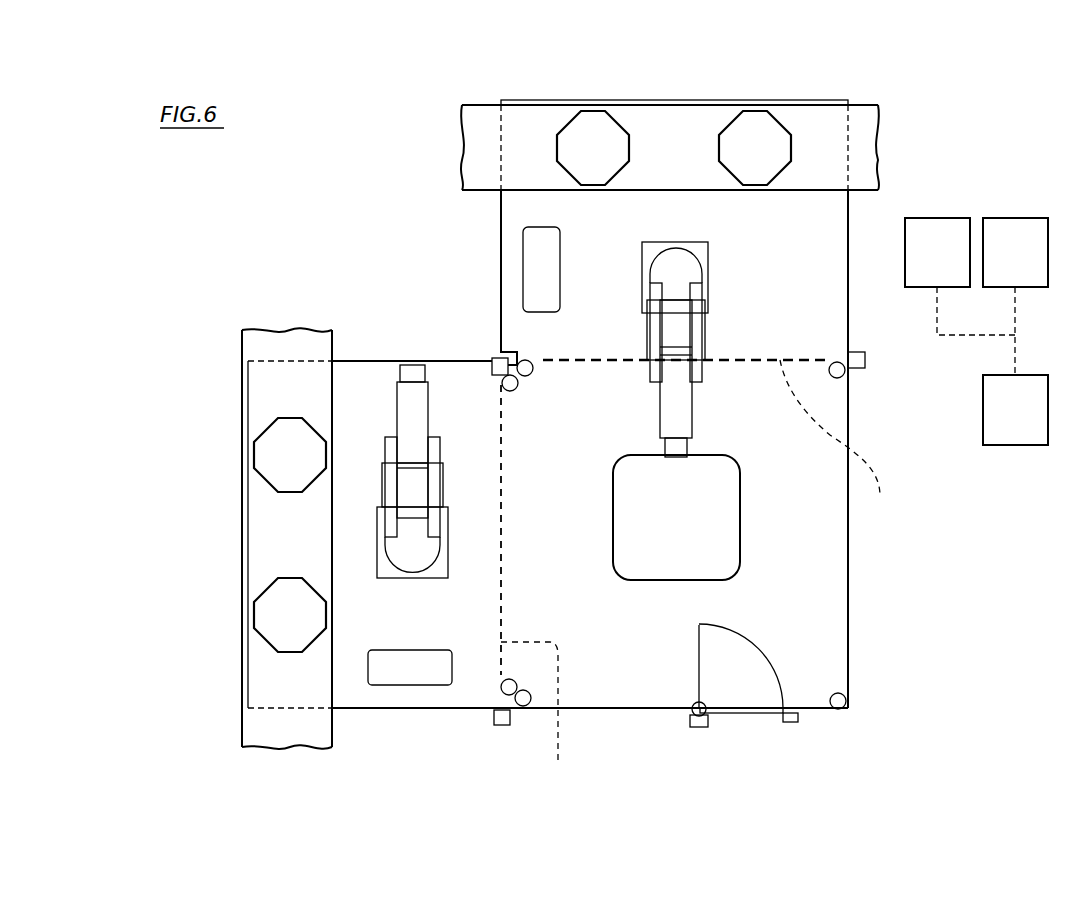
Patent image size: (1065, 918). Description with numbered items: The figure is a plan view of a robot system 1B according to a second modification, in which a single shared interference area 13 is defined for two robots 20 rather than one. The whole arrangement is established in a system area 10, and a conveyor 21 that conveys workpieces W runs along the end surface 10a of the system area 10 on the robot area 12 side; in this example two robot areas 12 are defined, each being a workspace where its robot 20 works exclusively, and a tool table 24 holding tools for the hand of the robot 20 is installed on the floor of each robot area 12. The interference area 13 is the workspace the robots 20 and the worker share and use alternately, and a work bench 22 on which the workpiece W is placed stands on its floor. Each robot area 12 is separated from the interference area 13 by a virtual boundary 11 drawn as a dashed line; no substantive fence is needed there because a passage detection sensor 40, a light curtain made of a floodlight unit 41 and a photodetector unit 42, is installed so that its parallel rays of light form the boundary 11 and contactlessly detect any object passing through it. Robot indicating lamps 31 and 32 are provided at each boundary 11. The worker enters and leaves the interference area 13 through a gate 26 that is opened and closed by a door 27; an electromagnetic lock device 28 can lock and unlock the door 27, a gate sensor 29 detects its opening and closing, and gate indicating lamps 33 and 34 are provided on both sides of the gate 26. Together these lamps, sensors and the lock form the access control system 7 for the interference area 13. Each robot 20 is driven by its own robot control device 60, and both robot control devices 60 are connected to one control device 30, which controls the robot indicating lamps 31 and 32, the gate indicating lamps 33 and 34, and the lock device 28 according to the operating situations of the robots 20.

The system area 10 is at (499, 99).
The end surface 10a is at (640, 100).
The workpiece W is at (593, 110).
The conveyor 21 is at (862, 100).
The robot system 1B is at (927, 104).
The passage detection sensor 40 is at (396, 273).
The tool table 24 is at (522, 255).
The robot area 12 is at (612, 312).
The robot 20 is at (736, 262).
The work bench 22 is at (613, 552).
The interference area 13 is at (794, 534).
The floodlight unit 41 is at (492, 362).
The robot indicating lamp 31 is at (518, 388).
The boundary 11 is at (701, 570).
The photodetector unit 42 is at (857, 352).
The robot indicating lamp 32 is at (845, 378).
The gate indicating lamp 33 is at (522, 706).
The robot control device 60 is at (949, 264).
The control device 30 is at (1027, 422).
The gate 26 is at (760, 719).
The door 27 is at (735, 714).
The gate sensor 29 is at (698, 728).
The electromagnetic lock device 28 is at (793, 724).
The gate indicating lamp 34 is at (847, 703).
The access control system 7 is at (922, 634).